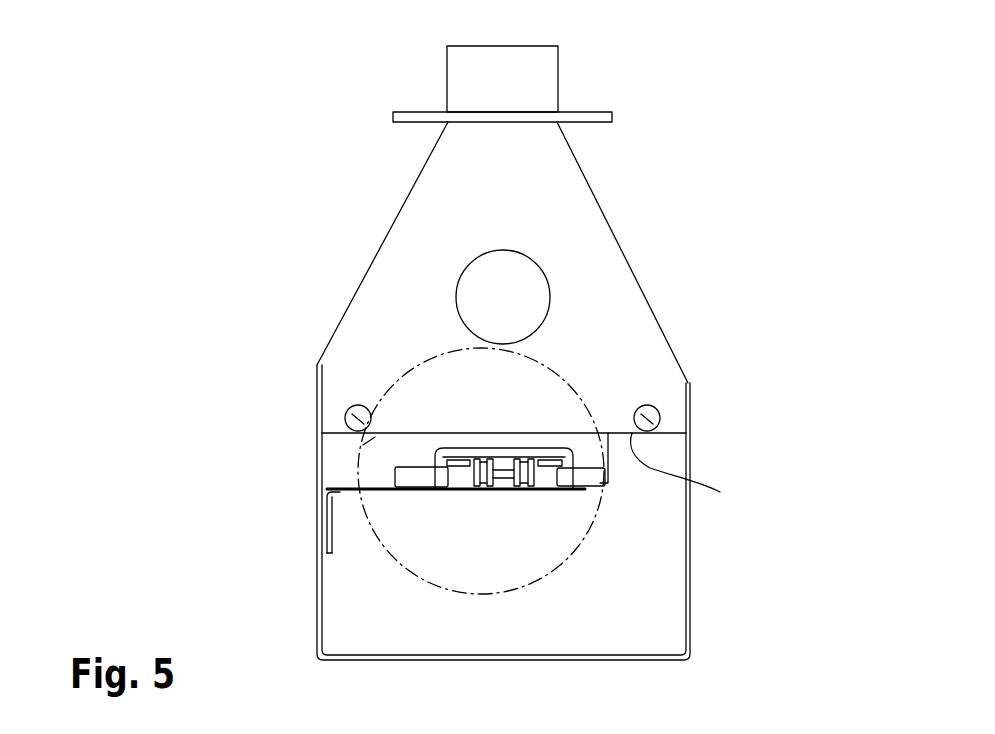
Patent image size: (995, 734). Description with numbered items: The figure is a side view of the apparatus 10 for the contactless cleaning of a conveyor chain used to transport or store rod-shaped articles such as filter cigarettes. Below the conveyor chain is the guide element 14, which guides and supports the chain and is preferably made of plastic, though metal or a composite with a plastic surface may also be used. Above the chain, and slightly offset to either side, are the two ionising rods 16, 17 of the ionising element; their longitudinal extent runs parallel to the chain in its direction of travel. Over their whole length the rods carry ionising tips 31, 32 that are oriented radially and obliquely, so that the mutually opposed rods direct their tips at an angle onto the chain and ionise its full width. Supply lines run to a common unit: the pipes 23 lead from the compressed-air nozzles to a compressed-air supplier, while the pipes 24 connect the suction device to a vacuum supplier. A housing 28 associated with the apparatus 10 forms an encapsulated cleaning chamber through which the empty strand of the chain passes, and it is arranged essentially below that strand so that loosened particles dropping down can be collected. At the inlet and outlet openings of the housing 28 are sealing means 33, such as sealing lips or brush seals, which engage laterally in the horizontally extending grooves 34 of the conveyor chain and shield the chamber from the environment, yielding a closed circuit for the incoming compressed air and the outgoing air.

The apparatus 10 is at (325, 245).
The guide element 14 is at (439, 490).
The ionising rod 16 is at (358, 418).
The ionising rod 17 is at (647, 418).
The pipes 23 is at (503, 297).
The pipes 24 is at (542, 73).
The housing 28 is at (672, 633).
The ionising tips 31 is at (375, 437).
The ionising tips 32 is at (720, 492).
The sealing means 33 is at (403, 480).
The grooves 34 is at (548, 473).